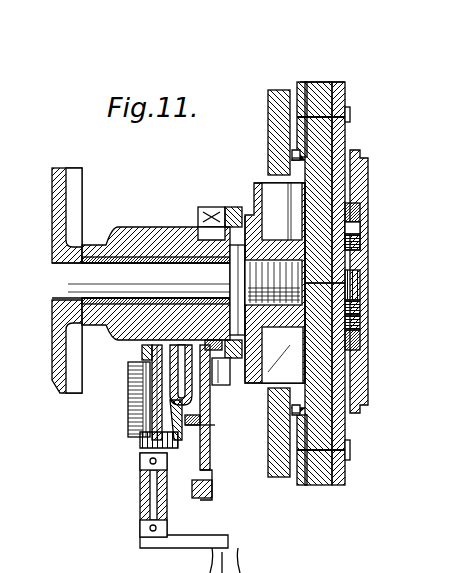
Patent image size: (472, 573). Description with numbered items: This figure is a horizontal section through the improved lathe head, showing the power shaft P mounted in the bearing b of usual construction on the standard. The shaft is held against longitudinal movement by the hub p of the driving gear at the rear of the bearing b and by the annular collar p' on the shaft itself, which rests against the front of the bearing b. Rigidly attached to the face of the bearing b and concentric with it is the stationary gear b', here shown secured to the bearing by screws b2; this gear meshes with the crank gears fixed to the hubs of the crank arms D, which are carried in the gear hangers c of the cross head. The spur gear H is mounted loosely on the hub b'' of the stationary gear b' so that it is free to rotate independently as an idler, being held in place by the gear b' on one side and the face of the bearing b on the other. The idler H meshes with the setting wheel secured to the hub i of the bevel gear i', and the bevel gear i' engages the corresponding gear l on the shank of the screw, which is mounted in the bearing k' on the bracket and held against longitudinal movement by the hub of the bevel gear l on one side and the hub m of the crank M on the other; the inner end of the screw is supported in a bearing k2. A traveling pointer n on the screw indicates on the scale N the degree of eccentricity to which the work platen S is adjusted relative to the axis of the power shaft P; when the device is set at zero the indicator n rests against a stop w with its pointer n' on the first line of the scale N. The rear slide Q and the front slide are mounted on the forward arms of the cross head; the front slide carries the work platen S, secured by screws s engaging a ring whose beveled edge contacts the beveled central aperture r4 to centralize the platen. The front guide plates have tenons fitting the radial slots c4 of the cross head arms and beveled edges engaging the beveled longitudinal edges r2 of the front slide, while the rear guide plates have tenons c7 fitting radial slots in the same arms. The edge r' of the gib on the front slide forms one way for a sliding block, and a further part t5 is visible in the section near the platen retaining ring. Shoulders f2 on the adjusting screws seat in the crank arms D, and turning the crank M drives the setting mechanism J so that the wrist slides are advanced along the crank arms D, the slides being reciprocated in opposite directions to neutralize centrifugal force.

The hub p is at (57, 280).
The power shaft P is at (122, 287).
The bearing b is at (156, 272).
The stationary gear b' is at (221, 198).
The hub b'' is at (211, 258).
The screws b2 is at (240, 207).
The spur gear H is at (198, 208).
The annular collar p' is at (231, 290).
The gear hangers c is at (274, 282).
The crank arms D is at (282, 211).
The screws s is at (361, 252).
The radial slots c4 is at (361, 228).
The tenons c7 is at (305, 82).
The rear slide Q is at (315, 161).
The central aperture r4 is at (370, 222).
The edge r' is at (376, 242).
The beveled longitudinal edges r2 is at (361, 320).
The work platen S is at (361, 285).
The tooth t5 is at (361, 305).
The bearing k2 is at (141, 351).
The scale N is at (129, 399).
The traveling pointer n is at (113, 387).
The pointer n' is at (114, 364).
The bevel gear l is at (138, 449).
The bevel gear i' is at (171, 414).
The stop w is at (140, 441).
The hub i is at (208, 426).
The shoulders f2 is at (231, 360).
The bearing k' is at (144, 495).
The setting mechanism J is at (91, 492).
The hub m is at (142, 533).
The crank M is at (205, 560).